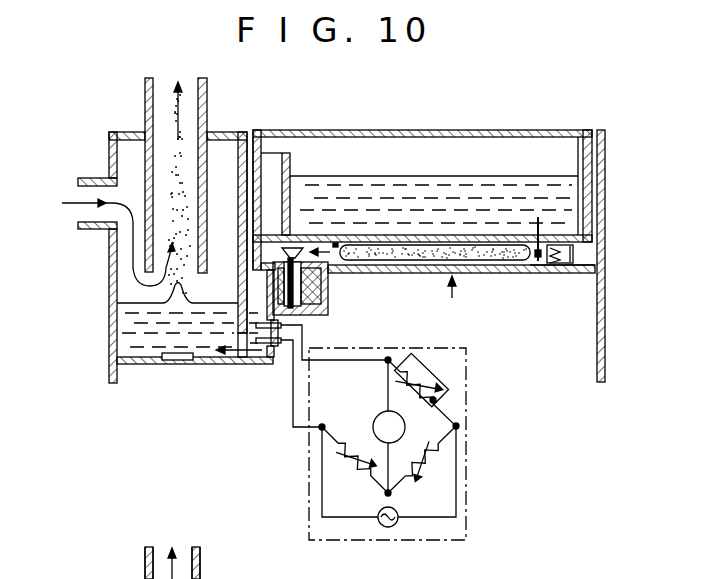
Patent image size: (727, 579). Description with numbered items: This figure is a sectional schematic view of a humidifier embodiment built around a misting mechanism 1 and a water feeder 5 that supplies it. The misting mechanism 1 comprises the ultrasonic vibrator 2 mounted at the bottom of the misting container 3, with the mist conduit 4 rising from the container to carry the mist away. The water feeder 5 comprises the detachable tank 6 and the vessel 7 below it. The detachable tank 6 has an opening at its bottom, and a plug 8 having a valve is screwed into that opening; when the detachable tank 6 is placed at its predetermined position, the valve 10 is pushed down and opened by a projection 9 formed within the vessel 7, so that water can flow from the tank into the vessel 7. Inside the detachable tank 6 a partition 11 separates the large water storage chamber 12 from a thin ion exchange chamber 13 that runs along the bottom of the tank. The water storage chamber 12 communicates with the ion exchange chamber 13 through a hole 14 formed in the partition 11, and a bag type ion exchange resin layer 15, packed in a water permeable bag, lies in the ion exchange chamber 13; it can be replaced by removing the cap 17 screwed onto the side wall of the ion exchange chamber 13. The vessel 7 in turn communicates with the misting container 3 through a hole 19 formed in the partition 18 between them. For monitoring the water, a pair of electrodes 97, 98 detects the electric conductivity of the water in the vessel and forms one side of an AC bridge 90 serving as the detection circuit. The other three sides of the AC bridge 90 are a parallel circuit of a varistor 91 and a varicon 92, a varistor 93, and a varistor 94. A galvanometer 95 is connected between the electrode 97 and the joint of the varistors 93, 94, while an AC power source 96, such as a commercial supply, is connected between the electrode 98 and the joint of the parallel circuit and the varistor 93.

The misting mechanism 1 is at (132, 372).
The ultrasonic vibrator 2 is at (170, 364).
The misting container 3 is at (123, 350).
The mist conduit 4 is at (208, 108).
The water feeder 5 is at (463, 331).
The detachable tank 6 is at (452, 131).
The vessel 7 is at (327, 313).
The plug 8 is at (312, 290).
The projection 9 is at (300, 313).
The valve 10 is at (316, 258).
The partition 11 is at (432, 232).
The water storage chamber 12 is at (551, 167).
The ion exchange chamber 13 is at (538, 268).
The hole 14 is at (535, 250).
The bag type ion exchange resin layer 15 is at (488, 259).
The cap 17 is at (575, 253).
The partition 18 is at (237, 260).
The hole 19 is at (241, 358).
The AC bridge 90 is at (418, 461).
The varistor 91 is at (432, 403).
The varicon 92 is at (455, 372).
The varistor 93 is at (427, 467).
The varistor 94 is at (340, 467).
The galvanometer 95 is at (376, 414).
The AC power source 96 is at (396, 527).
The electrode 97 is at (263, 348).
The electrode 98 is at (290, 372).